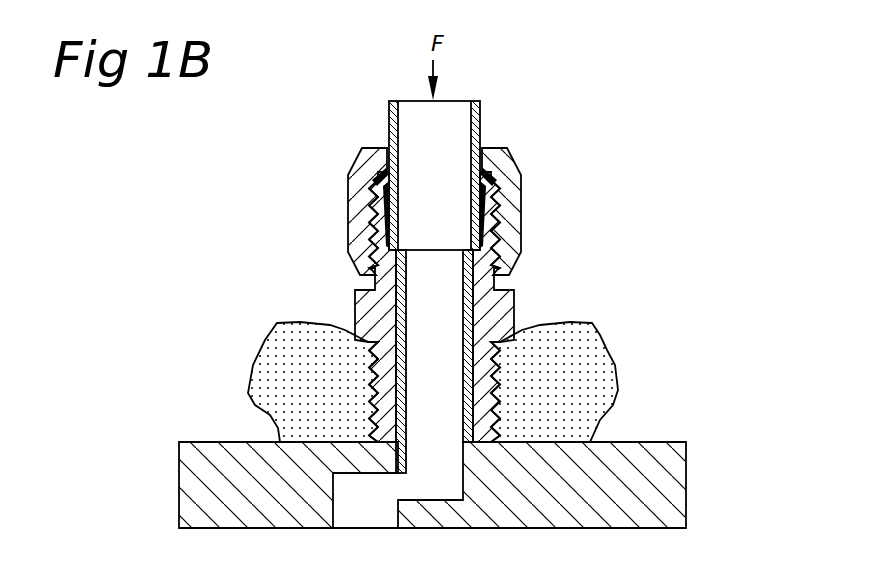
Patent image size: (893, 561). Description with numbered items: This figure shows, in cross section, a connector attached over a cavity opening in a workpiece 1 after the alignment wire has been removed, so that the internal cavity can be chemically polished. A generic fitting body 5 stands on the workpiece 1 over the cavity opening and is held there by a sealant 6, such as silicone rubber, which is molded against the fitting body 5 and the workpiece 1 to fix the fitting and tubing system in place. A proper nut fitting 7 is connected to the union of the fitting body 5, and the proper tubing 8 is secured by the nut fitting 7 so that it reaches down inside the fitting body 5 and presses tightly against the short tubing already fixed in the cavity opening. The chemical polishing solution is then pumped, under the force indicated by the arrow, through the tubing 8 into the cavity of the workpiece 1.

The workpiece 1 is at (667, 495).
The generic fitting body 5 is at (508, 320).
The sealant 6 is at (597, 371).
The nut fitting 7 is at (512, 213).
The tubing 8 is at (481, 125).